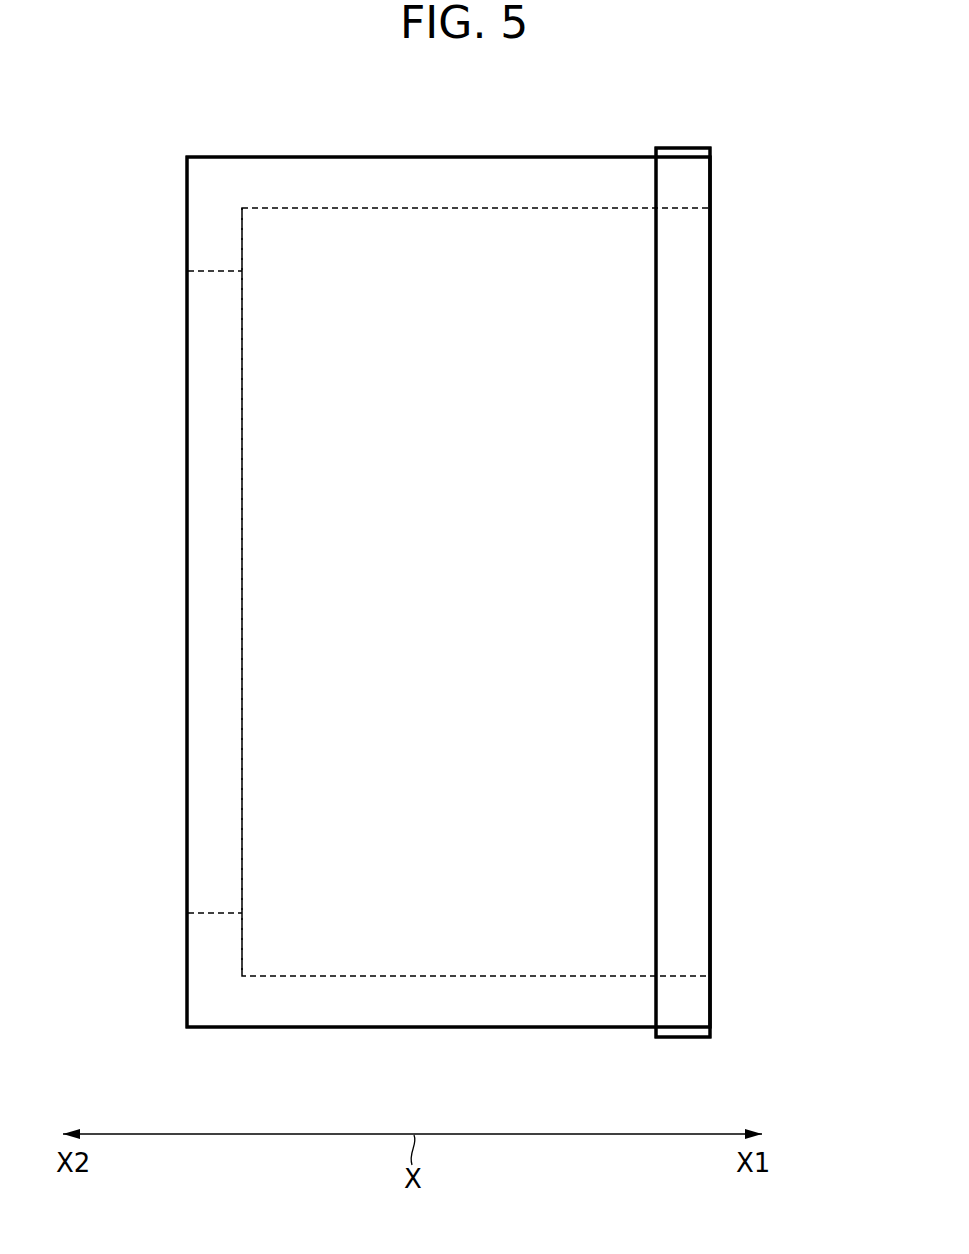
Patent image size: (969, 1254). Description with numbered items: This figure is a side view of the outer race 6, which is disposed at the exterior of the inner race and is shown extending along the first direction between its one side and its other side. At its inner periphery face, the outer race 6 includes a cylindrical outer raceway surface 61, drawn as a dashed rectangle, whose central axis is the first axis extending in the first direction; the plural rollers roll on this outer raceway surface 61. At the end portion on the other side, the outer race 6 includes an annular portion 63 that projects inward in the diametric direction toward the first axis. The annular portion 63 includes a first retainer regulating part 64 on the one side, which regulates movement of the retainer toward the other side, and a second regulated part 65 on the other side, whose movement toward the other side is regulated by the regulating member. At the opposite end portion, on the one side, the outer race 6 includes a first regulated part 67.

The outer race 6 is at (790, 62).
The outer raceway surface 61 is at (449, 209).
The annular portion 63 is at (215, 256).
The first retainer regulating part 64 is at (243, 241).
The second regulated part 65 is at (187, 187).
The first regulated part 67 is at (710, 187).